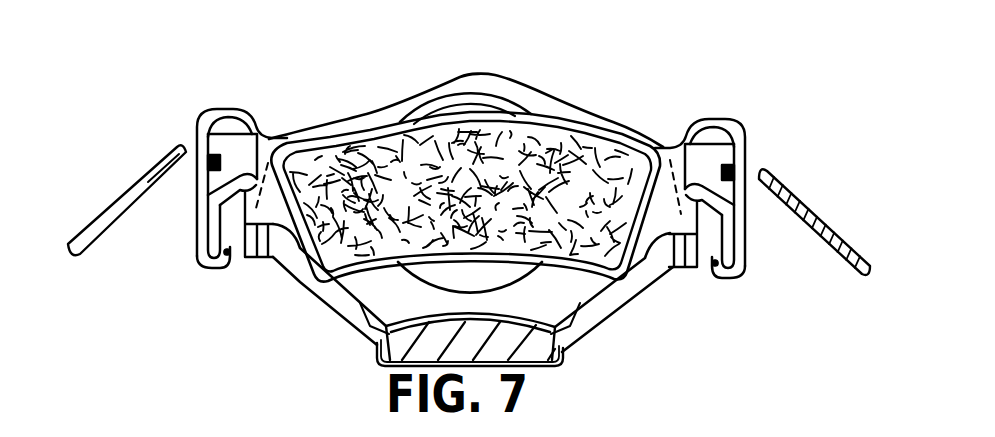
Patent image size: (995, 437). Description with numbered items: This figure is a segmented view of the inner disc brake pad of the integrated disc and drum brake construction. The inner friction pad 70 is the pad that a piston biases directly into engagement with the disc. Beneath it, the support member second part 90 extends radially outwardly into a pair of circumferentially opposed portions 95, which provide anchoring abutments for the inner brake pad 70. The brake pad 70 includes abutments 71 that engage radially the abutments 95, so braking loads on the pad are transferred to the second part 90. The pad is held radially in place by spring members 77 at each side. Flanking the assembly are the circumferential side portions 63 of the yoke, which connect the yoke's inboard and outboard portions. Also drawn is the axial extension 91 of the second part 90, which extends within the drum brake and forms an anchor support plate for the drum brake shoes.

The circumferential side portion 63 is at (98, 215).
The inner friction pad 70 is at (600, 128).
The abutment 71 is at (256, 206).
The spring member 77 is at (211, 111).
The second part 90 is at (600, 306).
The axial extension 91 is at (564, 358).
The circumferentially opposed portion 95 is at (230, 254).